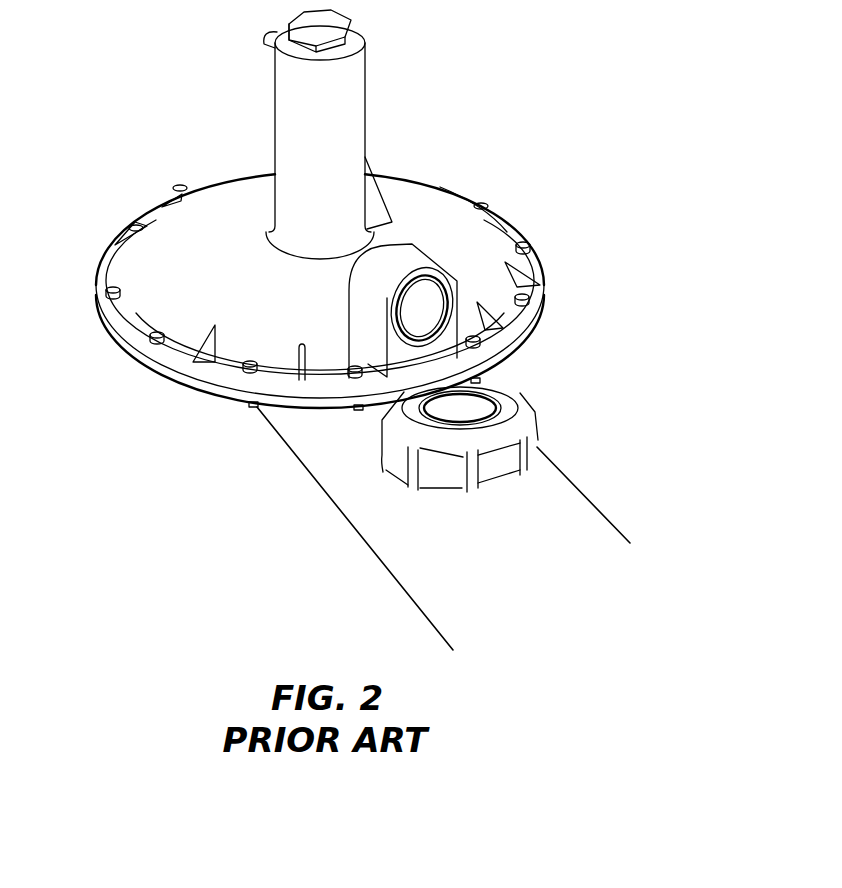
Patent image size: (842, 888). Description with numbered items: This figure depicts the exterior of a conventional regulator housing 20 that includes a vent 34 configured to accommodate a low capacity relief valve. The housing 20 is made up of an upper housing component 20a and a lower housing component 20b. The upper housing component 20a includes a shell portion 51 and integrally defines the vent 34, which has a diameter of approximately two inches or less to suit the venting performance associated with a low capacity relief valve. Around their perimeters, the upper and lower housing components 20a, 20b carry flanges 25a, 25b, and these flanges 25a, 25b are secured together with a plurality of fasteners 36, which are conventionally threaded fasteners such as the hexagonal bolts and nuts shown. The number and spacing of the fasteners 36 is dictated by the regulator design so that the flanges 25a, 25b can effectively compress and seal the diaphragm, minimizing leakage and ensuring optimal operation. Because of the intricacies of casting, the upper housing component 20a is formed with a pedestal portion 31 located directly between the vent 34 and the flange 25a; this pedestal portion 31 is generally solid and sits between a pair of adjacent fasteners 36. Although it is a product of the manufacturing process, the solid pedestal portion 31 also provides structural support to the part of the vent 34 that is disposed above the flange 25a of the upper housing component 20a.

The regulator housing 20 is at (168, 215).
The upper housing component 20a is at (227, 197).
The lower housing component 20b is at (292, 432).
The flange 25a is at (182, 350).
The flange 25b is at (178, 383).
The pedestal portion 31 is at (395, 352).
The vent 34 is at (437, 293).
The fasteners 36 is at (178, 188).
The shell portion 51 is at (448, 208).